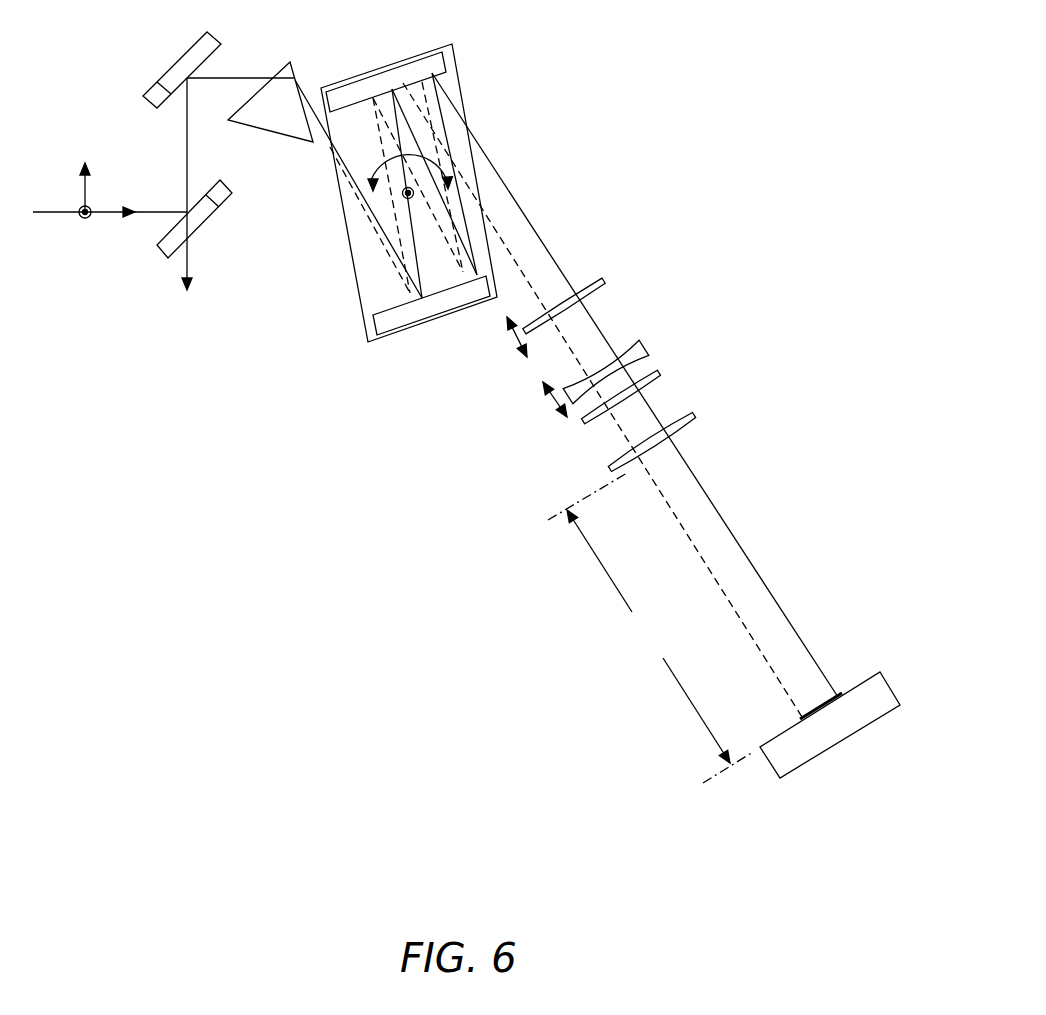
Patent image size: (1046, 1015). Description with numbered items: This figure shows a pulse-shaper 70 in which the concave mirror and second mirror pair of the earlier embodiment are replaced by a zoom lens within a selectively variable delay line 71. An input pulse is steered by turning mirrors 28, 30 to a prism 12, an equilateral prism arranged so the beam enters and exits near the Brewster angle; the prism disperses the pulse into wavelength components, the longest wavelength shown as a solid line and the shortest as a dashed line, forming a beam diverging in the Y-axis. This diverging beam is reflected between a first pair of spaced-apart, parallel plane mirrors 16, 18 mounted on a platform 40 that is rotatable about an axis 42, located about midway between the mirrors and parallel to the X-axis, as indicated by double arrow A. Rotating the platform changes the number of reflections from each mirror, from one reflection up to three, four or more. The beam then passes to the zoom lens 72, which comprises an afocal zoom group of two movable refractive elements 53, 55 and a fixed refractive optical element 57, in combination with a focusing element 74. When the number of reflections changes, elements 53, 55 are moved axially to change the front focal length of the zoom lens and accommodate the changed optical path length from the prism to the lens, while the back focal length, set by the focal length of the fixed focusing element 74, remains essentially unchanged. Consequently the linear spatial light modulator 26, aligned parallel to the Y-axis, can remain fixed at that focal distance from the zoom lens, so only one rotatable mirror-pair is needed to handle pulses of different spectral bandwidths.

The prism 12 is at (292, 138).
The plane mirror 16 is at (392, 313).
The plane mirror 18 is at (402, 83).
The linear spatial light modulator 26 is at (817, 712).
The turning mirror 28 is at (221, 208).
The turning mirror 30 is at (157, 80).
The platform 40 is at (366, 187).
The axis 42 is at (403, 198).
The movable refractive element 53 is at (605, 283).
The movable refractive element 55 is at (647, 343).
The fixed refractive optical element 57 is at (660, 372).
The pulse-shaper 70 is at (289, 721).
The selectively variable delay line 71 is at (640, 181).
The zoom lens 72 is at (628, 381).
The focusing element 74 is at (690, 420).